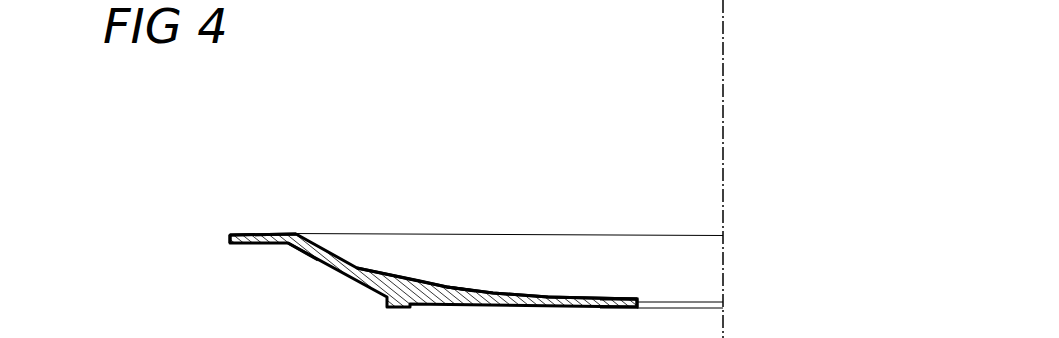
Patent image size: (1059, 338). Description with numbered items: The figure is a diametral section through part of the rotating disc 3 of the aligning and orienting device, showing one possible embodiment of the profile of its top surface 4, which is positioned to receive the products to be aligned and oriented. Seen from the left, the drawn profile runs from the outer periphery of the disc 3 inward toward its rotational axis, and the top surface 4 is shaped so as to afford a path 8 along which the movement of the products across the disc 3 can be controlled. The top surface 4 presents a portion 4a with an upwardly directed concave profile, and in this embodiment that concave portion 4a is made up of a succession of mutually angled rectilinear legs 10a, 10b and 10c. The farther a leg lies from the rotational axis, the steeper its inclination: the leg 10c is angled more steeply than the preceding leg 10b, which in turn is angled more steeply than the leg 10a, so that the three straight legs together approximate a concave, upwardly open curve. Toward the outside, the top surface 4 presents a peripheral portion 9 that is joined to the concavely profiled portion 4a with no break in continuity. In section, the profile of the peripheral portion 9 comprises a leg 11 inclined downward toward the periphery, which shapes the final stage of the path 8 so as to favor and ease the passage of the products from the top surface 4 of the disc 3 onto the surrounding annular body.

The rotating disc 3 is at (578, 271).
The top surface 4 is at (549, 287).
The portion with upwardly directed concave profile 4a is at (494, 285).
The path 8 is at (446, 286).
The peripheral portion 9 is at (258, 226).
The rectilinear leg 10a is at (615, 297).
The rectilinear leg 10b is at (394, 273).
The rectilinear leg 10c is at (319, 244).
The leg inclined downward toward the periphery 11 is at (230, 238).